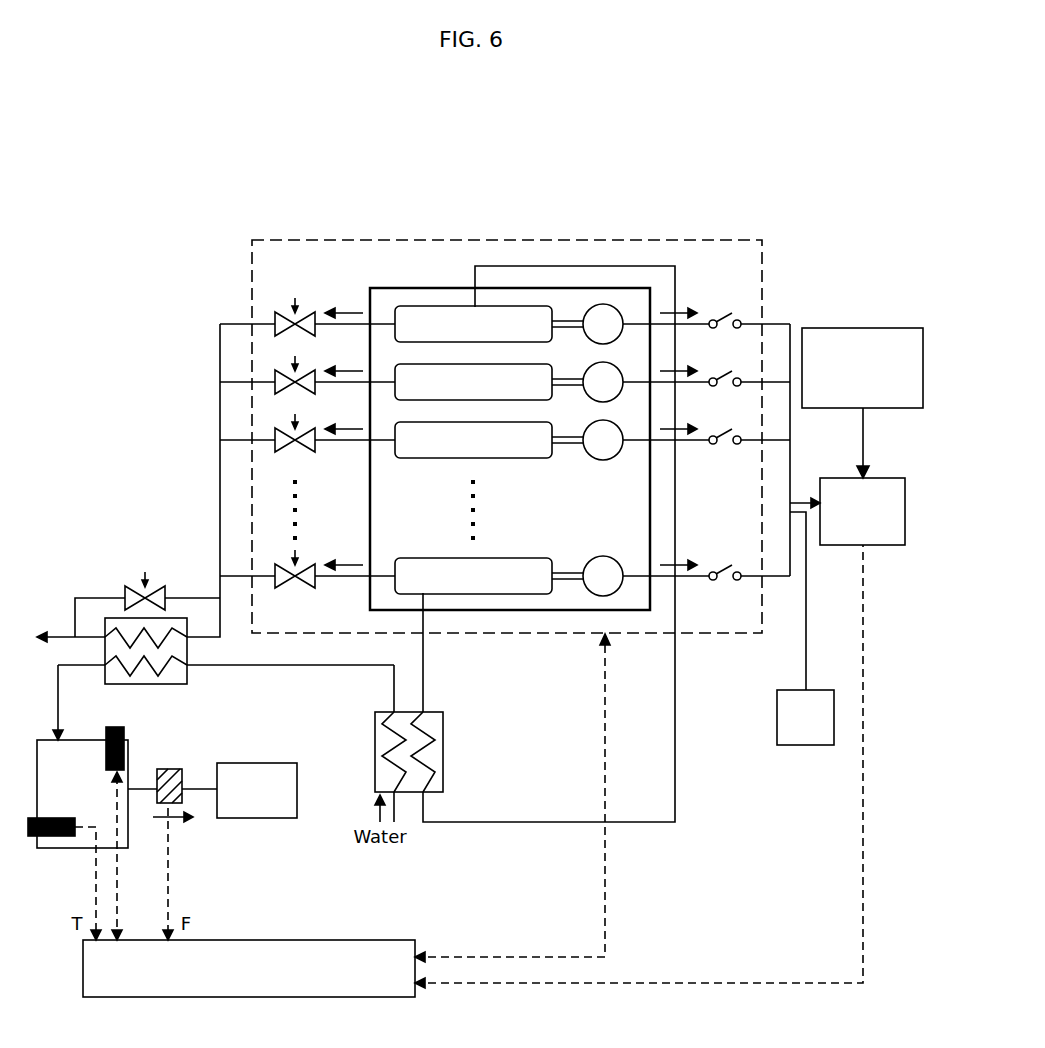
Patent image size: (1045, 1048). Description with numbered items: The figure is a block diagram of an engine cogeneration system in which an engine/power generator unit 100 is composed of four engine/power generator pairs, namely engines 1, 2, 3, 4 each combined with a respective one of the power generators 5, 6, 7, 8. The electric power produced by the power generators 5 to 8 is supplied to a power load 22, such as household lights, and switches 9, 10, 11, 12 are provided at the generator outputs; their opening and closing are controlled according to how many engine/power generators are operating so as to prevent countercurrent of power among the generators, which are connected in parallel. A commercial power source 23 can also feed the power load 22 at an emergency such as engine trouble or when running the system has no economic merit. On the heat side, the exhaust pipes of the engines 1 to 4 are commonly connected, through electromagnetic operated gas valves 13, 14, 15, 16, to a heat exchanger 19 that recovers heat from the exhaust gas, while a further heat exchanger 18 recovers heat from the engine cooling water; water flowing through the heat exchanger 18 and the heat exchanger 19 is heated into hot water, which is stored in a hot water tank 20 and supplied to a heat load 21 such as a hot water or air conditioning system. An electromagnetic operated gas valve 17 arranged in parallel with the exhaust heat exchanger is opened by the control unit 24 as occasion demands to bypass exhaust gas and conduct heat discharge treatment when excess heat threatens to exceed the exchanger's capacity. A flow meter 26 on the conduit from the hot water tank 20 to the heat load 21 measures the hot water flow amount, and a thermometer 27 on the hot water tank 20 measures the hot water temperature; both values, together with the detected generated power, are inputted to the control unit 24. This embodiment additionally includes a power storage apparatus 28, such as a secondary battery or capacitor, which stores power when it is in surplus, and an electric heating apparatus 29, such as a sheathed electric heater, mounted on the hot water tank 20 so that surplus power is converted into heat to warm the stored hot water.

The engine/power generator unit 100 is at (452, 287).
The engine 1 is at (435, 305).
The engine 2 is at (395, 368).
The engine 3 is at (420, 458).
The engine 4 is at (428, 558).
The power generator 5 is at (603, 304).
The power generator 6 is at (613, 365).
The power generator 7 is at (605, 460).
The power generator 8 is at (615, 556).
The switch 9 is at (730, 312).
The switch 10 is at (735, 365).
The switch 11 is at (733, 452).
The switch 12 is at (728, 570).
The electromagnetic operated gas valve 13 is at (275, 323).
The electromagnetic operated gas valve 14 is at (275, 382).
The electromagnetic operated gas valve 15 is at (275, 440).
The electromagnetic operated gas valve 16 is at (275, 575).
The electromagnetic operated gas valve 17 is at (125, 598).
The heat exchanger 18 is at (445, 752).
The heat exchanger 19 is at (187, 675).
The hot water tank 20 is at (85, 740).
The heat load 21 is at (255, 763).
The power load 22 is at (893, 478).
The commercial power source 23 is at (862, 328).
The control unit 24 is at (256, 940).
The flow meter 26 is at (168, 769).
The thermometer 27 is at (30, 836).
The power storage apparatus 28 is at (800, 745).
The electric heating apparatus 29 is at (124, 730).